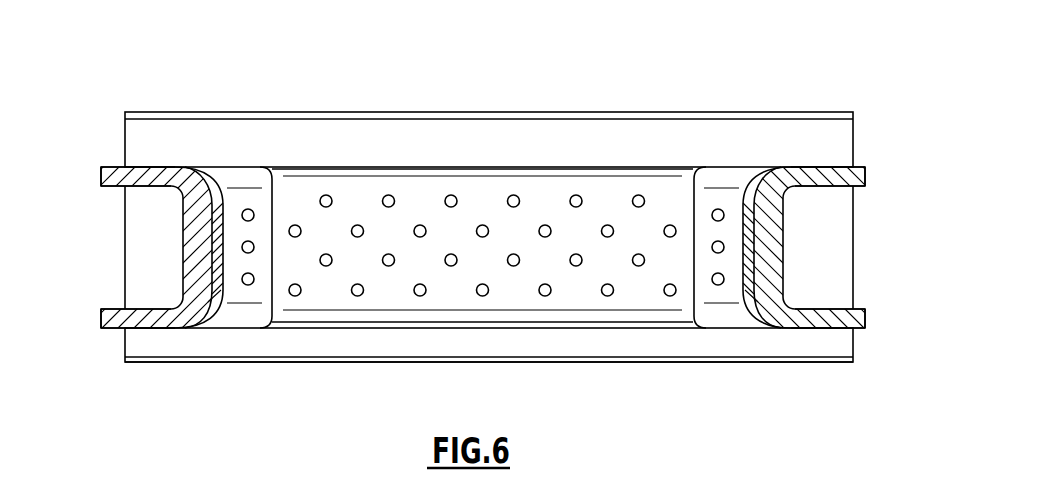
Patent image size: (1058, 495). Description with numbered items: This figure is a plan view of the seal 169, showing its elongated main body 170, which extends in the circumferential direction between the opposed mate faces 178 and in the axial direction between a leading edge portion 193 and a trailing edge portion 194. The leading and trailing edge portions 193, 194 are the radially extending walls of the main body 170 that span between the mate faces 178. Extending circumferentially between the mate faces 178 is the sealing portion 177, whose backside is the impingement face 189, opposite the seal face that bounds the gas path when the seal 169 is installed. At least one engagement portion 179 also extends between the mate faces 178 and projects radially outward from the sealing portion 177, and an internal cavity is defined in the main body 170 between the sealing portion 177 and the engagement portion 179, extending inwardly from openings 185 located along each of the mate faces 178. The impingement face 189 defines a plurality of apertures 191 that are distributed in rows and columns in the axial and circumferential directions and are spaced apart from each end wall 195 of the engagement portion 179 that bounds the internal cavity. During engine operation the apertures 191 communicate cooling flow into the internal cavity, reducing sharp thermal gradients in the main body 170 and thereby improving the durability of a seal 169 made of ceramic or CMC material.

The seal 169 is at (116, 78).
The main body 170 is at (597, 363).
The sealing portion 177 is at (830, 117).
The mate faces 178 is at (125, 346).
The engagement portion 179 is at (730, 176).
The openings 185 is at (156, 191).
The impingement face 189 is at (658, 194).
The apertures 191 is at (240, 253).
The leading edge portion 193 is at (372, 323).
The trailing edge portion 194 is at (398, 173).
The end wall 195 is at (186, 233).